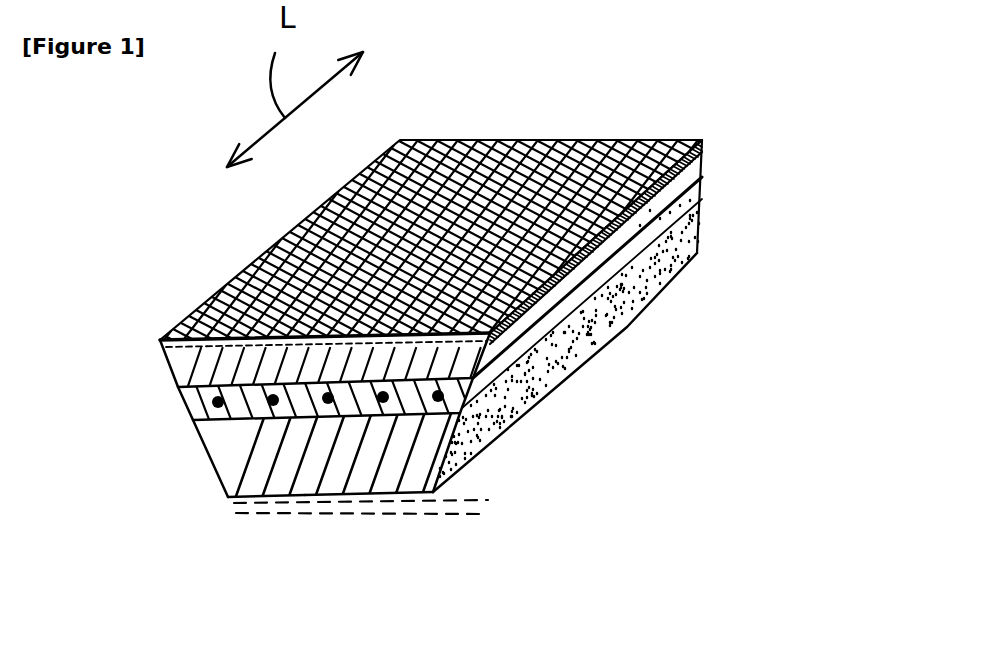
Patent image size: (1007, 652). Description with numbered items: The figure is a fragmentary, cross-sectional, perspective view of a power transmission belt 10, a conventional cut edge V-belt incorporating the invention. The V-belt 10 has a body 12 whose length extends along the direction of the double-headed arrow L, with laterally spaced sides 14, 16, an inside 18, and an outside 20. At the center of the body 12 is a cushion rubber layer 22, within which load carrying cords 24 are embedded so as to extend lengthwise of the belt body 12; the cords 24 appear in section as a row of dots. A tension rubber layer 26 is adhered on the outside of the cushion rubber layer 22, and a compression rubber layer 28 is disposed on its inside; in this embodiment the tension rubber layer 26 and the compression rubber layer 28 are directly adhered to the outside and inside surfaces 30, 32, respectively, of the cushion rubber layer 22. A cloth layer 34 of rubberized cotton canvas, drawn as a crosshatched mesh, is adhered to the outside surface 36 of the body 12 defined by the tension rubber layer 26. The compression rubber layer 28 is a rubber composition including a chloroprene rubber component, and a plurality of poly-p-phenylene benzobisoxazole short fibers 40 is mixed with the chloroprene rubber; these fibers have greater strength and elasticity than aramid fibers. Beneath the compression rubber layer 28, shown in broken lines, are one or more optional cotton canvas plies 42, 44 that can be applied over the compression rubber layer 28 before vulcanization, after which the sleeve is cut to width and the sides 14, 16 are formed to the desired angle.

The power transmission belt 10 is at (664, 85).
The body 12 is at (718, 178).
The side 14 is at (203, 450).
The side 16 is at (483, 437).
The inside 18 is at (315, 514).
The outside 20 is at (333, 333).
The cushion rubber layer 22 is at (186, 407).
The load carrying cords 24 is at (268, 418).
The tension rubber layer 26 is at (183, 366).
The compression rubber layer 28 is at (366, 418).
The outside surface 30 is at (535, 334).
The inside surface 32 is at (377, 497).
The cloth layer 34 is at (518, 147).
The outside surface 36 is at (238, 342).
The poly-p-phenylene benzobisoxazole short fibers 40 is at (566, 372).
The cotton canvas ply 42 is at (375, 499).
The cotton canvas ply 44 is at (376, 518).